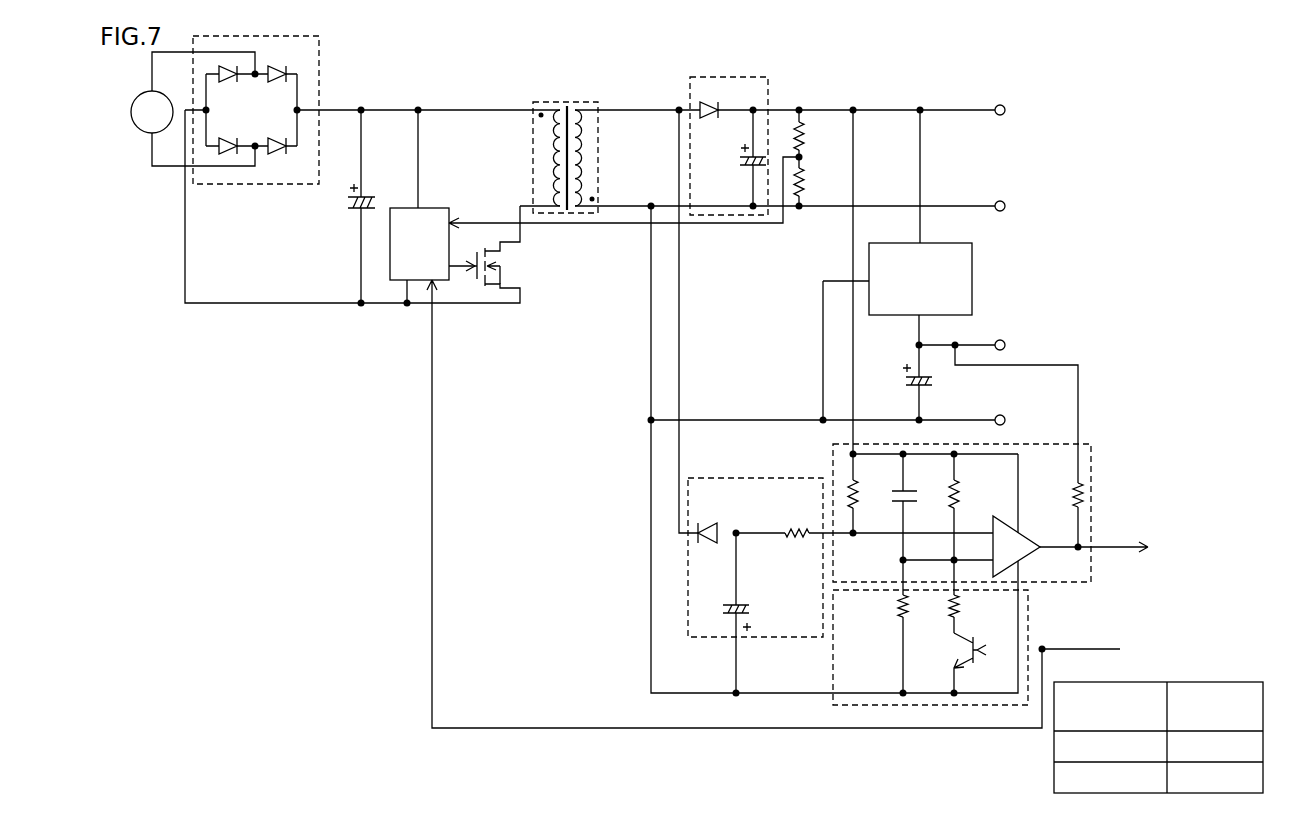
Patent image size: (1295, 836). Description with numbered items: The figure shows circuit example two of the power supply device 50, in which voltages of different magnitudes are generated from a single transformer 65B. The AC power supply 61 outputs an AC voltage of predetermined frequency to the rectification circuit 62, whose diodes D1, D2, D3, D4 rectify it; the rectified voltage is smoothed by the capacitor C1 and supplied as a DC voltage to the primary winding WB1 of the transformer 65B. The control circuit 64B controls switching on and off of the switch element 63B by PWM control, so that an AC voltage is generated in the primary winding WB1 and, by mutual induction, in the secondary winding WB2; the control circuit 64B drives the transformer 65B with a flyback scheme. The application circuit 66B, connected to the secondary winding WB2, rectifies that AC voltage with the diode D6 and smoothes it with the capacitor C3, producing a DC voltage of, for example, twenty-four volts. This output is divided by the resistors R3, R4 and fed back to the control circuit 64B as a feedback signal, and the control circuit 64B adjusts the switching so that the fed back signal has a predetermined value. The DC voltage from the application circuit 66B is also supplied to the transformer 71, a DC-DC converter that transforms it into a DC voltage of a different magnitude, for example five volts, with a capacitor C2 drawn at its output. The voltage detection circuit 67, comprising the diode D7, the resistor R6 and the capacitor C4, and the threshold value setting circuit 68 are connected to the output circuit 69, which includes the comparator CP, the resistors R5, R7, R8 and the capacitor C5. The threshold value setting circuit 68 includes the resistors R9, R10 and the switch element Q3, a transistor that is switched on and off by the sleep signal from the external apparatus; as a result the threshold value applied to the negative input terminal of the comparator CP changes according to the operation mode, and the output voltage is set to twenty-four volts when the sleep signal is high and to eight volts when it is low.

The power supply device 50 is at (1125, 60).
The AC power supply 61 is at (140, 92).
The rectification circuit 62 is at (245, 188).
The switch element 63B is at (512, 266).
The control circuit 64B is at (430, 208).
The transformer 65B is at (566, 103).
The application circuit 66B is at (762, 78).
The voltage detection circuit 67 is at (770, 479).
The threshold value setting circuit 68 is at (1029, 613).
The output circuit 69 is at (1088, 444).
The transformer 71 is at (958, 243).
The diode D1 is at (229, 84).
The diode D2 is at (277, 67).
The diode D3 is at (229, 137).
The diode D4 is at (279, 152).
The diode D6 is at (712, 101).
The diode D7 is at (705, 522).
The capacitor C1 is at (356, 210).
The capacitor C2 is at (926, 389).
The capacitor C3 is at (748, 168).
The capacitor C4 is at (728, 606).
The capacitor C5 is at (911, 502).
The resistor R3 is at (806, 133).
The resistor R4 is at (806, 181).
The resistor R5 is at (858, 490).
The resistor R6 is at (787, 540).
The resistor R7 is at (961, 492).
The resistor R8 is at (1088, 492).
The resistor R9 is at (897, 606).
The resistor R10 is at (962, 601).
The switch element Q3 is at (963, 640).
The comparator CP is at (1027, 556).
The primary winding WB1 is at (540, 153).
The secondary winding WB2 is at (596, 153).